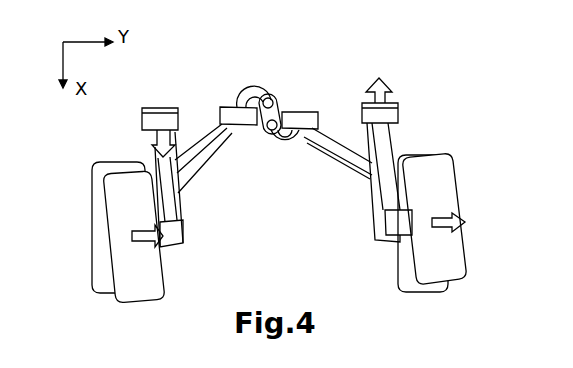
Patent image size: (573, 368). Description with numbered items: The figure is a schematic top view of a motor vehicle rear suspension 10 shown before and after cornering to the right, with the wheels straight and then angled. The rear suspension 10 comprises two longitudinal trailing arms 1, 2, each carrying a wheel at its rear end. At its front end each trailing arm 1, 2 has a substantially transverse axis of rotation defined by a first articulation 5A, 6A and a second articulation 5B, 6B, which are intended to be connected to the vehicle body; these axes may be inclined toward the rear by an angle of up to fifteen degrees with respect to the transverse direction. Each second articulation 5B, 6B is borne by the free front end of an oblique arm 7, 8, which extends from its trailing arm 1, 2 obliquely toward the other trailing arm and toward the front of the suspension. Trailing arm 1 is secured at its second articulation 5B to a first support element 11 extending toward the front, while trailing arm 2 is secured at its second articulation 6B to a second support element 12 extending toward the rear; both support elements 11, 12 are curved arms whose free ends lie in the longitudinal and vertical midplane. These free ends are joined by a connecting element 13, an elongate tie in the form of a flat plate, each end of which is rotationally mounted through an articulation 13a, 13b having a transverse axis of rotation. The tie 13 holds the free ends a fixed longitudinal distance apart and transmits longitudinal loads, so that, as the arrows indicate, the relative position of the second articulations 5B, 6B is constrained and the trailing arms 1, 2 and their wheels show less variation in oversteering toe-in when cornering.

The trailing arm 1 is at (173, 208).
The trailing arm 2 is at (388, 200).
The first articulation 5A is at (143, 120).
The second articulation 5B is at (217, 117).
The first articulation 6A is at (398, 108).
The second articulation 6B is at (306, 110).
The oblique arm 7 is at (198, 164).
The oblique arm 8 is at (360, 176).
The rear suspension 10 is at (406, 58).
The first support element 11 is at (238, 104).
The second support element 12 is at (296, 146).
The connecting element 13 is at (273, 98).
The articulation 13a is at (253, 86).
The articulation 13b is at (273, 130).